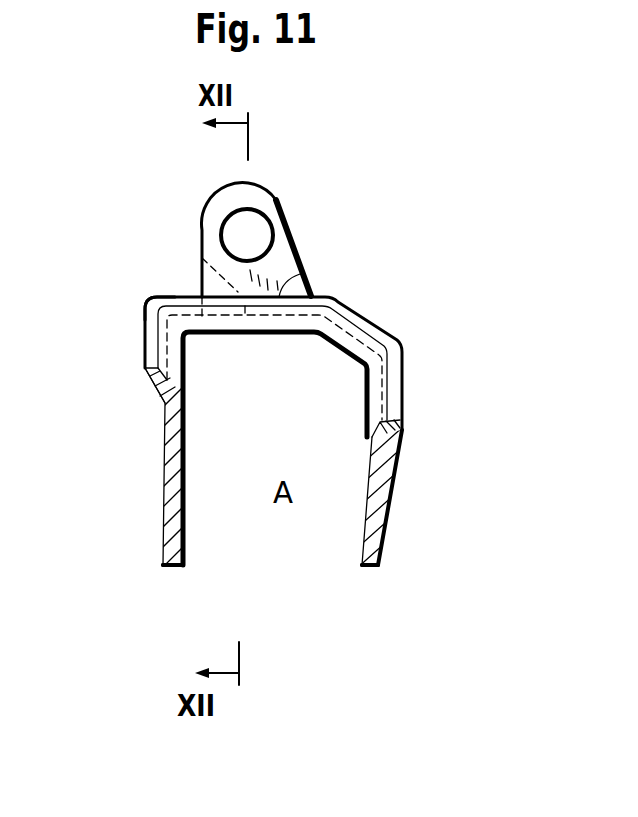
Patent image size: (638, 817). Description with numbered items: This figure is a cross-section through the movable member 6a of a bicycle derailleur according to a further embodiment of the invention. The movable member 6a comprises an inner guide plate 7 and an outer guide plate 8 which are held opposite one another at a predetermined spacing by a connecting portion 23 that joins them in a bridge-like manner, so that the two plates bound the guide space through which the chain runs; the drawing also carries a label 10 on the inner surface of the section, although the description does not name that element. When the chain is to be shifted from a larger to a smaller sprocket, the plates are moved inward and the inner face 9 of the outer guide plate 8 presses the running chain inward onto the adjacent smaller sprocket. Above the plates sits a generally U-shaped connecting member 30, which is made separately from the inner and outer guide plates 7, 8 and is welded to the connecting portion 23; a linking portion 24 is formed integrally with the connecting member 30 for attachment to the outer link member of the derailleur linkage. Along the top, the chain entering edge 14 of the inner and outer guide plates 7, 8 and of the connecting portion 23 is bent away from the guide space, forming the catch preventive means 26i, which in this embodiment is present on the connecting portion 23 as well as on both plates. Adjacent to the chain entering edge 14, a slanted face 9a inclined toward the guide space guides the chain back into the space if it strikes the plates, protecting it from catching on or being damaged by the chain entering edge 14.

The movable member 6a is at (163, 289).
The inner guide plate 7 is at (162, 477).
The outer guide plate 8 is at (387, 497).
The inner face 9 is at (182, 533).
The slanted face 9a is at (173, 387).
The inner surface 10 is at (263, 335).
The chain entering edge 14 is at (308, 273).
The connecting portion 23 is at (197, 247).
The linking portion 24 is at (283, 202).
The catch preventive means 26i is at (395, 304).
The connecting member 30 is at (298, 232).